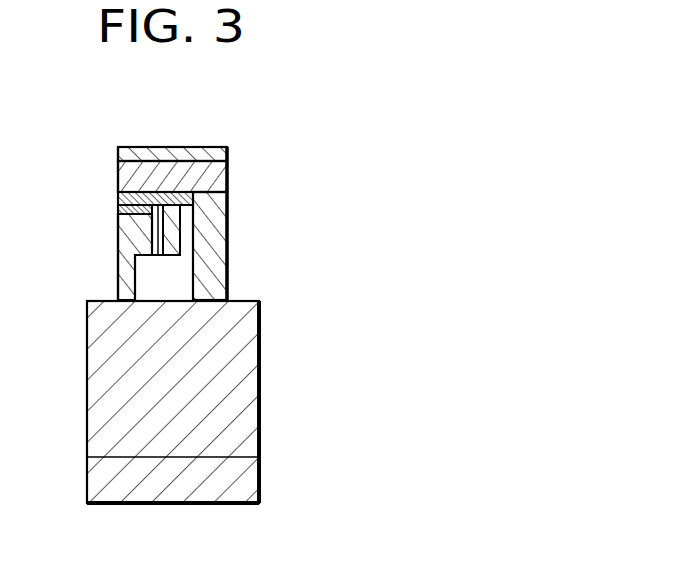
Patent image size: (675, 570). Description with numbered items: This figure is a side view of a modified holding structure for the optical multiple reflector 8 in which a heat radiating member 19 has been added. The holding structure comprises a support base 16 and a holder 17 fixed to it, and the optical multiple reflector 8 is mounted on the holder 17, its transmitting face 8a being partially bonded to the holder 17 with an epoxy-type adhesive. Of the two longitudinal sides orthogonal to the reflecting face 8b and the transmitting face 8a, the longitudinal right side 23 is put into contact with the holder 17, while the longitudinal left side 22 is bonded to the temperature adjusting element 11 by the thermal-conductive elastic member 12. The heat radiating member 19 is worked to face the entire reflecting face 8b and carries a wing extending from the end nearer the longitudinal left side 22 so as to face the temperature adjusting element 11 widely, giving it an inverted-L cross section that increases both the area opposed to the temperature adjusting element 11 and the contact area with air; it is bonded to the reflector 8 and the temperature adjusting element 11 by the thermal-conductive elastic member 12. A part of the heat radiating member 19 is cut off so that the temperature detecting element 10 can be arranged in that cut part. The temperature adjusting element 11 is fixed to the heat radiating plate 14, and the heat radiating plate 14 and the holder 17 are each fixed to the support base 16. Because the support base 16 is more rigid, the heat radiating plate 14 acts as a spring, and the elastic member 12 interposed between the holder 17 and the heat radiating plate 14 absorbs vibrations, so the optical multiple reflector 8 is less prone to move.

The optical multiple reflector 8 is at (173, 238).
The transmitting face 8a is at (203, 222).
The reflecting face 8b is at (140, 231).
The temperature detecting element 10 is at (140, 250).
The temperature adjusting element 11 is at (137, 176).
The thermal-conductive elastic member 12 is at (117, 203).
The heat radiating plate 14 is at (213, 157).
The support base 16 is at (198, 405).
The holder 17 is at (180, 277).
The heat radiating member 19 is at (150, 205).
The longitudinal left side 22 is at (172, 191).
The longitudinal right side 23 is at (177, 257).